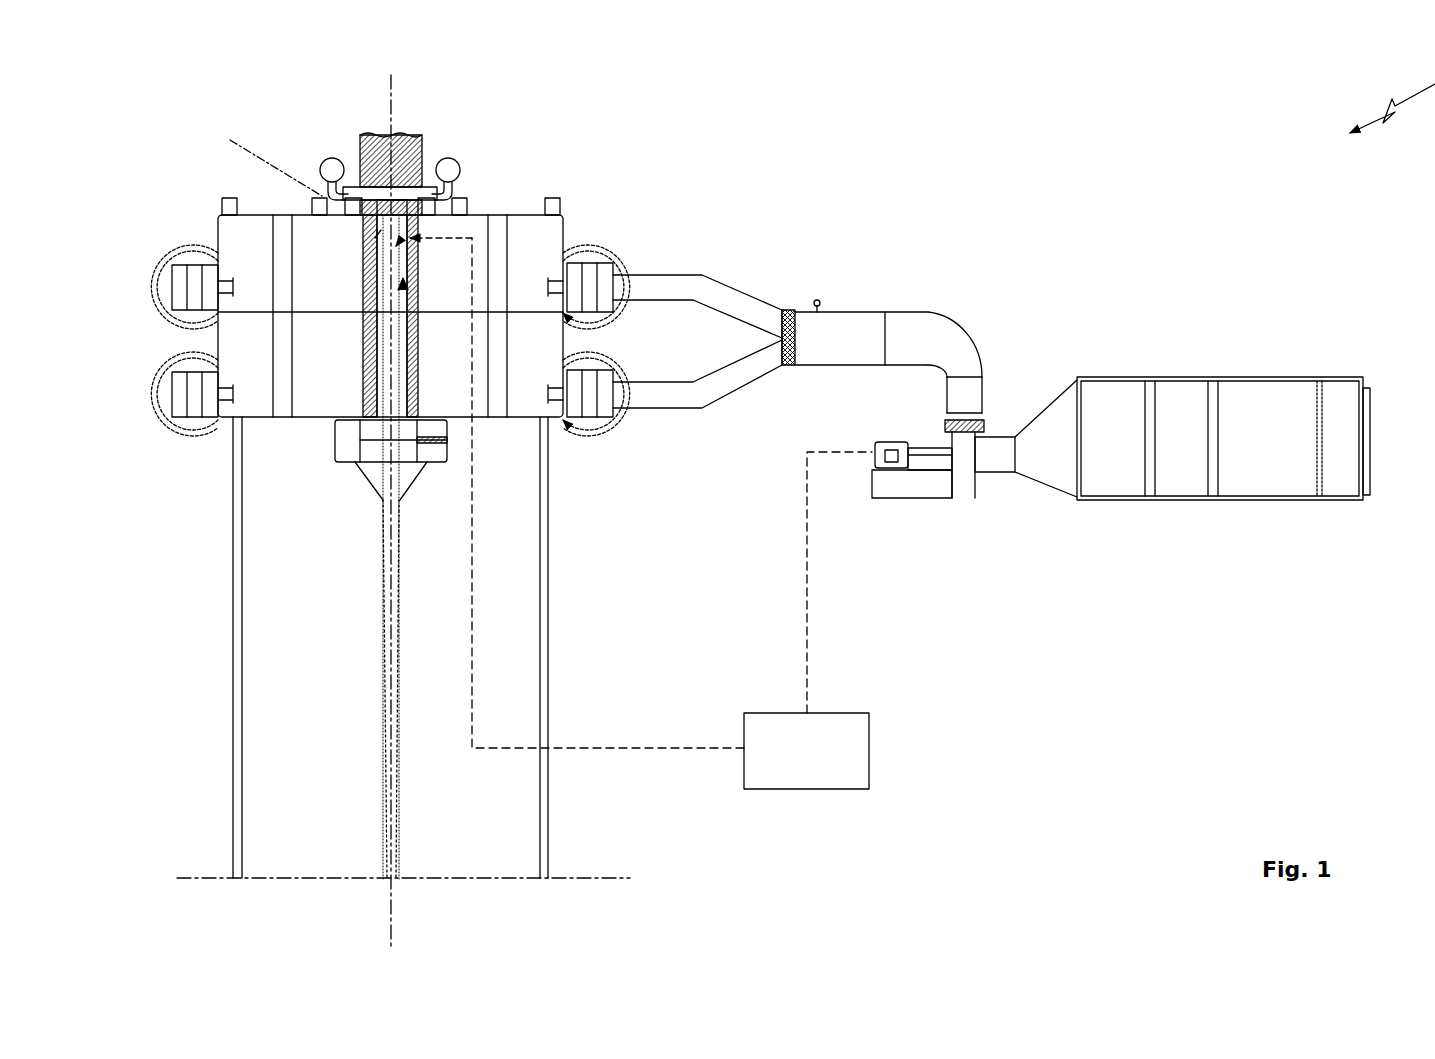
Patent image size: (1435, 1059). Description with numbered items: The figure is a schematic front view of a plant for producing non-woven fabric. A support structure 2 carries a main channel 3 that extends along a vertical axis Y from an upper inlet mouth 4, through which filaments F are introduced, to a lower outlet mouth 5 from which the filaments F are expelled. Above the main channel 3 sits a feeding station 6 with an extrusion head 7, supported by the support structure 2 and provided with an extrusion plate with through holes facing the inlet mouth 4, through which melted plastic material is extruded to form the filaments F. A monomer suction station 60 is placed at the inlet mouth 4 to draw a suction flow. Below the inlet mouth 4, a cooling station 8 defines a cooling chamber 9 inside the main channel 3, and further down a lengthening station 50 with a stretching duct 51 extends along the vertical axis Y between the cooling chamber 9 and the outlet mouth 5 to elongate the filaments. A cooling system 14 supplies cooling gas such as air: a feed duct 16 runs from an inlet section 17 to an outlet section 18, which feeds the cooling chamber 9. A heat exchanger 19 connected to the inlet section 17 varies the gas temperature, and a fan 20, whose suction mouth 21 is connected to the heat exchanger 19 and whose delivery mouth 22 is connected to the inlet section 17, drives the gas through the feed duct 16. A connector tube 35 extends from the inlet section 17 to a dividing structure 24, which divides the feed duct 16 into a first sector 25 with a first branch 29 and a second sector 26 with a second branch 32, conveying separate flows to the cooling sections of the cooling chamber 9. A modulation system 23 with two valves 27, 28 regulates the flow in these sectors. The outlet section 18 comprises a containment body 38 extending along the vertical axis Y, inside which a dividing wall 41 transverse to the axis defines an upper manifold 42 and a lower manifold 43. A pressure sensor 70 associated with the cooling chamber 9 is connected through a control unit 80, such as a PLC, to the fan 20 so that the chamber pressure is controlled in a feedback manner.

The support structure 2 is at (218, 757).
The main channel 3 is at (372, 372).
The inlet mouth 4 is at (412, 192).
The outlet mouth 5 is at (397, 884).
The feeding station 6 is at (424, 128).
The extrusion head 7 is at (356, 137).
The cooling station 8 is at (198, 186).
The cooling chamber 9 is at (408, 284).
The cooling system 14 is at (1022, 300).
The feed duct 16 is at (800, 250).
The inlet section 17 is at (962, 285).
The outlet section 18 is at (605, 226).
The heat exchanger 19 is at (1228, 338).
The fan 20 is at (900, 516).
The suction mouth 21 is at (997, 474).
The delivery mouth 22 is at (978, 426).
The modulation system 23 is at (784, 378).
The dividing structure 24 is at (698, 252).
The first sector 25 is at (664, 266).
The second sector 26 is at (690, 430).
The valve 27 is at (785, 306).
The valve 28 is at (796, 350).
The first branch 29 is at (668, 290).
The second branch 32 is at (641, 395).
The connector tube 35 is at (906, 322).
The containment body 38 is at (492, 432).
The dividing wall 41 is at (185, 338).
The upper manifold 42 is at (361, 263).
The lower manifold 43 is at (361, 364).
The lengthening station 50 is at (292, 661).
The stretching duct 51 is at (408, 652).
The monomer suction station 60 is at (300, 140).
The pressure sensor 70 is at (420, 230).
The control unit 80 is at (870, 746).
The filaments F is at (264, 158).
The vertical axis Y is at (400, 509).